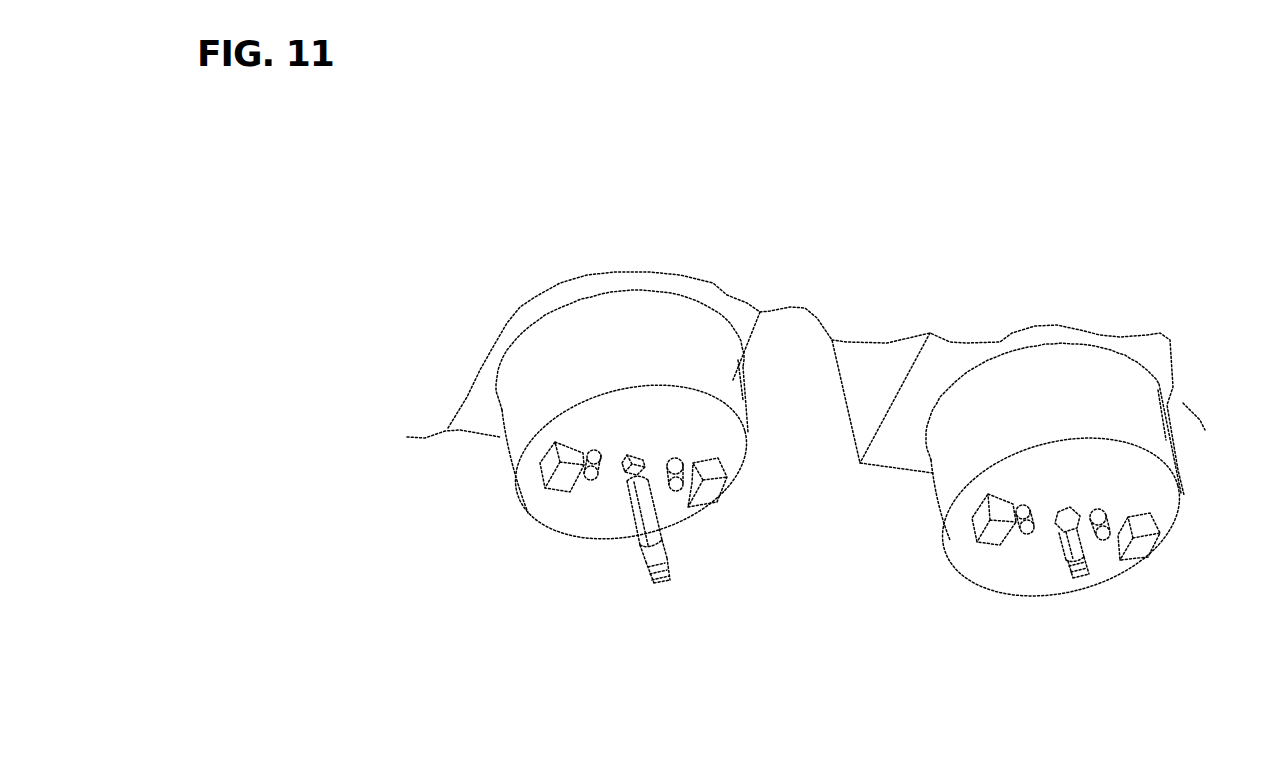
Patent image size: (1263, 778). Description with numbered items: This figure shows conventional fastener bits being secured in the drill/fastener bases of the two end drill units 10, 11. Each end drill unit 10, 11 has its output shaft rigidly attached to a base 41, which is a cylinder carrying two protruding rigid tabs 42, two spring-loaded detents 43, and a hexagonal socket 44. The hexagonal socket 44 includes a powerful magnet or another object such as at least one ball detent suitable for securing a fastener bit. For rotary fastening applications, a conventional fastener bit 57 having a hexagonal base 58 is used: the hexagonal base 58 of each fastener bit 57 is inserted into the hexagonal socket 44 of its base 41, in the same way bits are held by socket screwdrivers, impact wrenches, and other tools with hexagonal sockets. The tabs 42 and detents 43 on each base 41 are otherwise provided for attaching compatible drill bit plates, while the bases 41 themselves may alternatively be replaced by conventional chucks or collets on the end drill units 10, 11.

The end drill unit 10 is at (478, 413).
The end drill unit 11 is at (897, 452).
The base 41 is at (722, 380).
The protruding rigid tab 42 is at (543, 497).
The spring-loaded detent 43 is at (585, 483).
The hexagonal socket 44 is at (623, 463).
The fastener bit 57 is at (646, 565).
The hexagonal base 58 is at (642, 548).